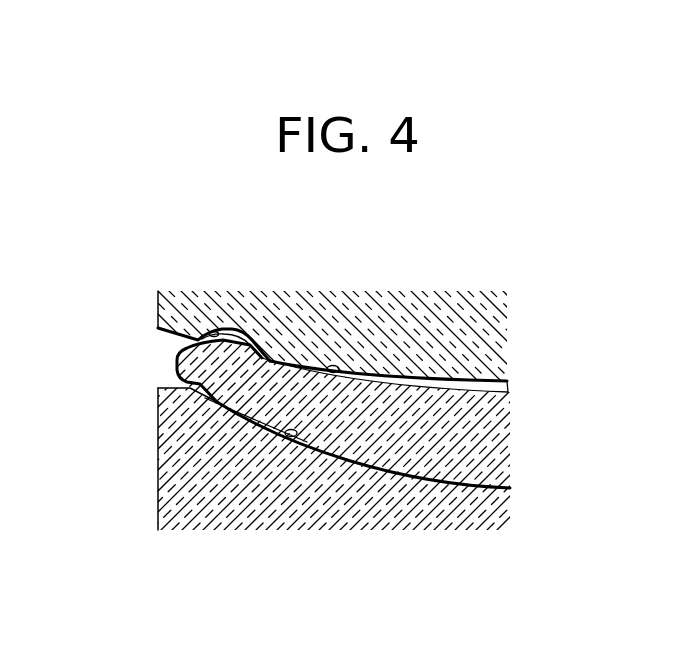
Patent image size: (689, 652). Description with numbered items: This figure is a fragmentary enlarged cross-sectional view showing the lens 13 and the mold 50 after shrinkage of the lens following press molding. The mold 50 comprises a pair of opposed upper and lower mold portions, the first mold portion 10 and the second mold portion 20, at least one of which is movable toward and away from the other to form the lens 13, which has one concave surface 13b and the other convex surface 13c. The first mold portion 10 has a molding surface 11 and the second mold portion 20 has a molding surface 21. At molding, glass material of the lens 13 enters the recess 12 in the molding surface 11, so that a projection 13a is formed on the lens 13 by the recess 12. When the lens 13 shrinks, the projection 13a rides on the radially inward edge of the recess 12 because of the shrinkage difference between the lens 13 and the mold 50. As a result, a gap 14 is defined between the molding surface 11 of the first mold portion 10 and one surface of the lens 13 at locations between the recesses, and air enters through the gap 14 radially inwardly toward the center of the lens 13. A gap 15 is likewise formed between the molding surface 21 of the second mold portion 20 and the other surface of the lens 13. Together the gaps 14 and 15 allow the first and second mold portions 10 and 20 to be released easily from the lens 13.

The first mold portion 10 is at (517, 293).
The molding surface 11 is at (345, 362).
The recess 12 is at (222, 328).
The lens 13 is at (478, 431).
The projection 13a is at (239, 350).
The concave surface 13b is at (400, 376).
The convex surface 13c is at (210, 413).
The gap 14 is at (465, 382).
The gap 15 is at (236, 417).
The second mold portion 20 is at (418, 527).
The molding surface 21 is at (298, 437).
The mold 50 is at (125, 359).